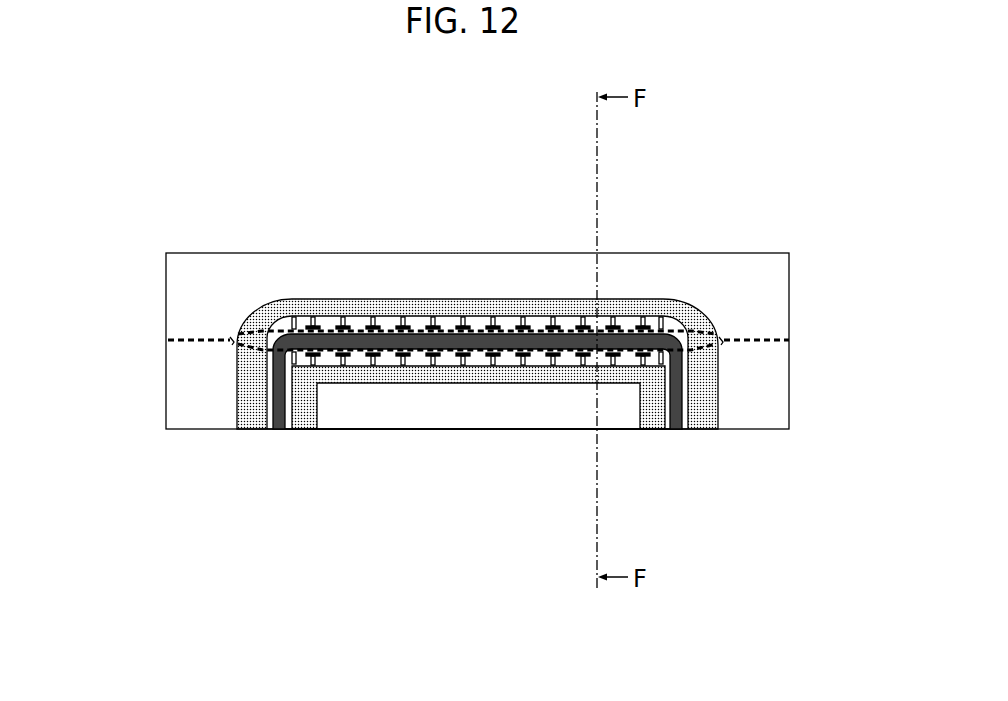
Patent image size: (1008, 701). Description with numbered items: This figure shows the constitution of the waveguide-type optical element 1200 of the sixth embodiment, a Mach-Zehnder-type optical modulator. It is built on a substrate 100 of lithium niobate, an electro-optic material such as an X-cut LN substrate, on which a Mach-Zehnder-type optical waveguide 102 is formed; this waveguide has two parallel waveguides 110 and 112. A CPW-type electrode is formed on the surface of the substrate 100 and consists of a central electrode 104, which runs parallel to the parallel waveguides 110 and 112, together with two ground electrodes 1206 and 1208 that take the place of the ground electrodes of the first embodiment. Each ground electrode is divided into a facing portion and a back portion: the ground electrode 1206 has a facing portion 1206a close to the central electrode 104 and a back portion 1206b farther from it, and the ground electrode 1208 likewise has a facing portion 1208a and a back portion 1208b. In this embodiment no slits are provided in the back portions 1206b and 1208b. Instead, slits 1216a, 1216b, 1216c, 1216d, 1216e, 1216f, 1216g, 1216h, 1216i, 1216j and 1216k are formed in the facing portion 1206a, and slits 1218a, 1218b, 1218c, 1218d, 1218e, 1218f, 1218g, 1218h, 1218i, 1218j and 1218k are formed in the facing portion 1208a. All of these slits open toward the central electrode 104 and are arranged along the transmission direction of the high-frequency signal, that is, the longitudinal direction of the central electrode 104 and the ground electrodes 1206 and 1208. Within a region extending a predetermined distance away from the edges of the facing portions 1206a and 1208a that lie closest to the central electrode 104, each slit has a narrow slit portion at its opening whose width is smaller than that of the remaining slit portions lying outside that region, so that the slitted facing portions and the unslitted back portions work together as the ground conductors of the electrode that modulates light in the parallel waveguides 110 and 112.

The substrate 100 is at (165, 259).
The Mach-Zehnder-type optical waveguide 102 is at (182, 336).
The central electrode 104 is at (297, 299).
The parallel waveguide 110 is at (258, 315).
The parallel waveguide 112 is at (257, 367).
The waveguide-type optical element 1200 is at (185, 159).
The ground electrode 1206 is at (786, 204).
The facing portion 1206a is at (698, 302).
The back portion 1206b is at (668, 307).
The ground electrode 1208 is at (787, 485).
The facing portion 1208a is at (703, 392).
The back portion 1208b is at (677, 398).
The slit 1216a is at (317, 328).
The slit 1216b is at (347, 328).
The slit 1216c is at (377, 328).
The slit 1216d is at (408, 328).
The slit 1216e is at (438, 328).
The slit 1216f is at (468, 328).
The slit 1216g is at (500, 328).
The slit 1216h is at (533, 328).
The slit 1216i is at (563, 328).
The slit 1216j is at (614, 328).
The slit 1216k is at (650, 326).
The slit 1218a is at (315, 362).
The slit 1218b is at (345, 362).
The slit 1218c is at (375, 362).
The slit 1218d is at (408, 362).
The slit 1218e is at (438, 362).
The slit 1218f is at (472, 362).
The slit 1218g is at (510, 362).
The slit 1218h is at (543, 362).
The slit 1218i is at (582, 362).
The slit 1218j is at (600, 362).
The slit 1218k is at (630, 362).